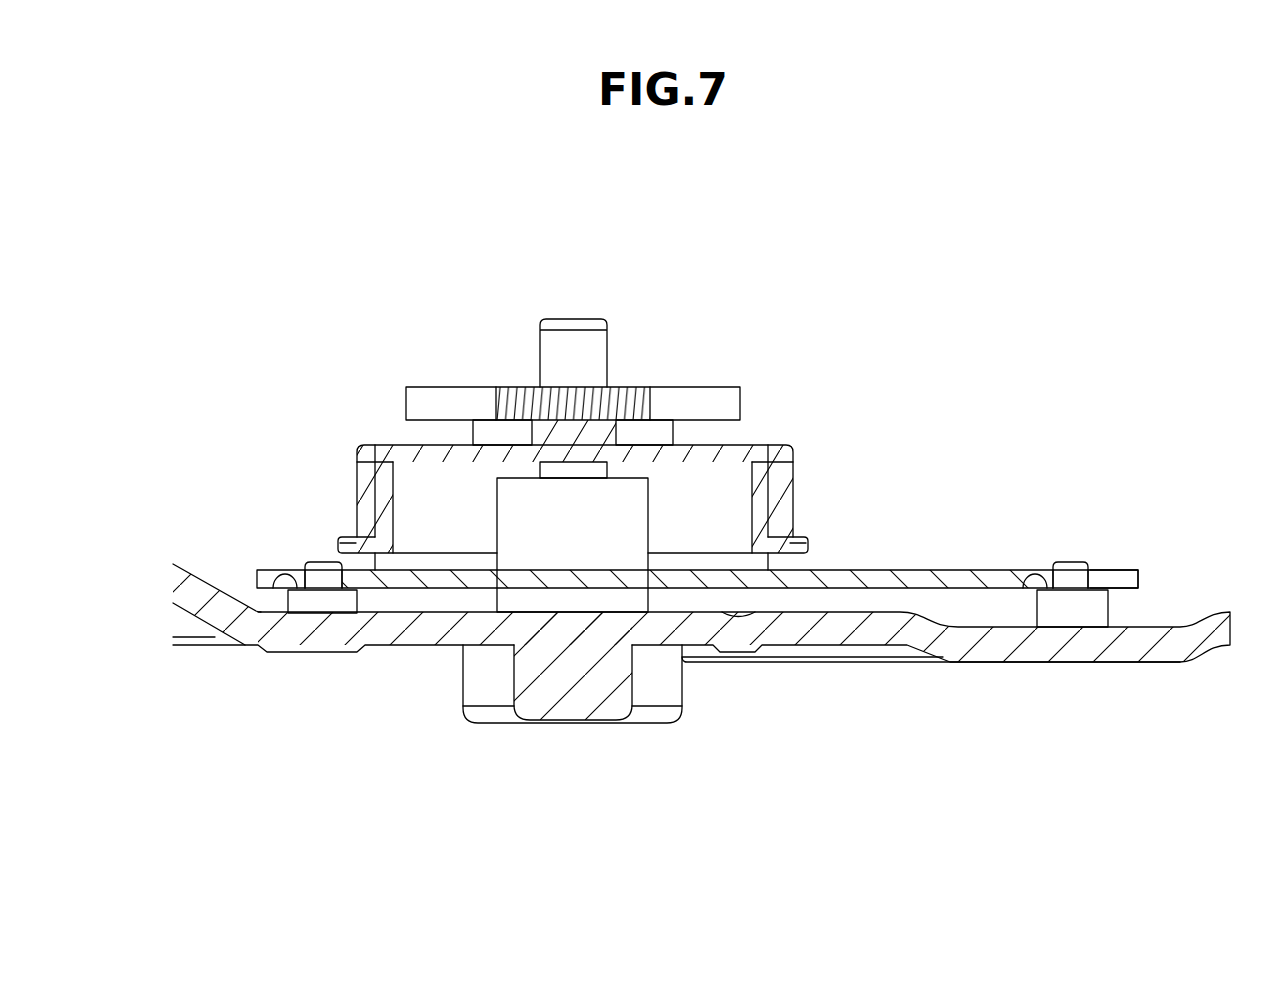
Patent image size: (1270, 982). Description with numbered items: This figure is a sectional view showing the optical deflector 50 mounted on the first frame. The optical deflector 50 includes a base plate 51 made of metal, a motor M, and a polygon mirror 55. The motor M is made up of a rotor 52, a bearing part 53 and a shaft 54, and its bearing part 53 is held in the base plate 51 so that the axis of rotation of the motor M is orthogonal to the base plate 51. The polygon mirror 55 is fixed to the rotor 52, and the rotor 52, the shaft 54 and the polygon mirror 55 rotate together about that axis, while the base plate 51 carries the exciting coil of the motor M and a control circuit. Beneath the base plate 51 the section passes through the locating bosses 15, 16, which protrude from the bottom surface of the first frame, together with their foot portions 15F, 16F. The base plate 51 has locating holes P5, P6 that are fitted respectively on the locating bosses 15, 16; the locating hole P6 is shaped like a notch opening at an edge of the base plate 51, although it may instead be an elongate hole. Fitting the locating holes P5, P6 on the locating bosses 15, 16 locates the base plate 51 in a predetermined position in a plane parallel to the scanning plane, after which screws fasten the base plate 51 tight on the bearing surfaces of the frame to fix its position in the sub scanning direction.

The optical deflector 50 is at (625, 439).
The base plate 51 is at (928, 570).
The rotor 52 is at (742, 445).
The bearing part 53 is at (637, 510).
The shaft 54 is at (556, 346).
The polygon mirror 55 is at (446, 386).
The motor M is at (625, 509).
The locating boss 15 is at (320, 568).
The left fastener foot 15F is at (280, 576).
The locating hole P5 is at (337, 582).
The locating boss 16 is at (1070, 570).
The right fastener foot 16F is at (1025, 580).
The locating hole P6 is at (1112, 578).